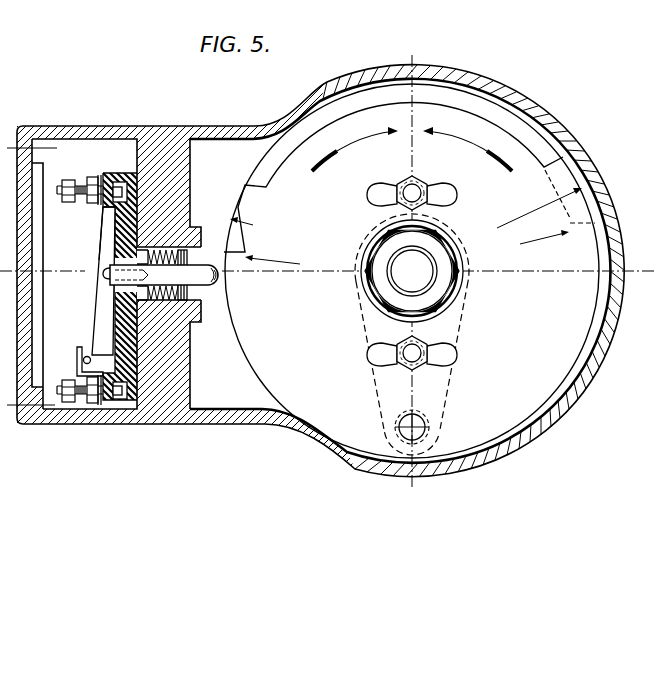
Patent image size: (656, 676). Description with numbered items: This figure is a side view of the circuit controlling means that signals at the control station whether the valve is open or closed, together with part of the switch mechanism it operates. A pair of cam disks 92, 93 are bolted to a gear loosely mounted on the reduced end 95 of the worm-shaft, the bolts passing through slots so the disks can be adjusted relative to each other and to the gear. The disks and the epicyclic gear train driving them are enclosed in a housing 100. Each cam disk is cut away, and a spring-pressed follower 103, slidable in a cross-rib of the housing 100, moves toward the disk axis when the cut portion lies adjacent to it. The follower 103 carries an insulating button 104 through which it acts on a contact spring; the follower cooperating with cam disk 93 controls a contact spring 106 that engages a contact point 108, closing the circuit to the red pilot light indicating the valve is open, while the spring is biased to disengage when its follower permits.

The cam disk 92 is at (243, 207).
The cam disk 93 is at (258, 352).
The reduced end of the worm-shaft 95 is at (412, 271).
The housing 100 is at (173, 412).
The spring-pressed follower 103 is at (205, 262).
The insulating button 104 is at (98, 268).
The contact spring 106 is at (96, 291).
The contact point 108 is at (83, 362).